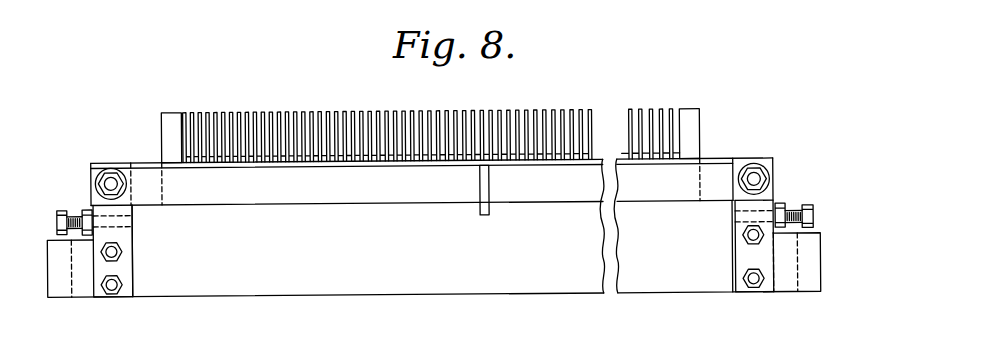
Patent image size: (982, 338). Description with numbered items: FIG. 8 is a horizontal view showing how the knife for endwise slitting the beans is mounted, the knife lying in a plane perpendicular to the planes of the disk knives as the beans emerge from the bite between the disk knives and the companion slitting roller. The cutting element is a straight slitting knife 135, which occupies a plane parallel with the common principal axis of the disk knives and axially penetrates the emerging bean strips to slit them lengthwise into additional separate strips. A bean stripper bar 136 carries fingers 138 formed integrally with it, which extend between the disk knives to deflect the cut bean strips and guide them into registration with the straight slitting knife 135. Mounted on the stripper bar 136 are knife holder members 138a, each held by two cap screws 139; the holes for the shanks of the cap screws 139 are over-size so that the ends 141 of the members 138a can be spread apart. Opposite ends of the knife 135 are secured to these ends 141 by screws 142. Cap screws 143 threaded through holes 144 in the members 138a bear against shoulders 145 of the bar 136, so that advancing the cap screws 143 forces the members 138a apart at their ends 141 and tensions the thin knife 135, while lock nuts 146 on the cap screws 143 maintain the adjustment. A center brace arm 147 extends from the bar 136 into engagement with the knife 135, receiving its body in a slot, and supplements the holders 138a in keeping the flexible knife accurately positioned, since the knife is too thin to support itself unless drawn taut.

The straight slitting knife 135 is at (356, 199).
The bean stripper bar 136 is at (282, 288).
The stripper fingers 138 is at (317, 114).
The knife holder members 138a is at (125, 236).
The cap screws 139 is at (104, 291).
The ends of the knife holder members 141 is at (92, 163).
The screws 142 is at (112, 178).
The cap screws 143 is at (57, 211).
The holes 144 is at (758, 212).
The shoulders 145 is at (133, 224).
The lock nuts 146 is at (80, 214).
The center brace arm 147 is at (480, 215).